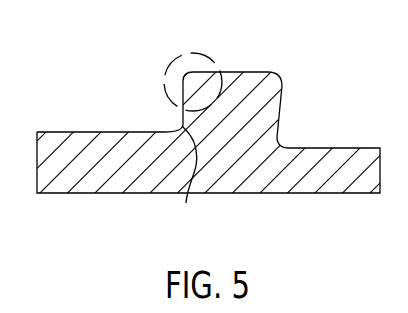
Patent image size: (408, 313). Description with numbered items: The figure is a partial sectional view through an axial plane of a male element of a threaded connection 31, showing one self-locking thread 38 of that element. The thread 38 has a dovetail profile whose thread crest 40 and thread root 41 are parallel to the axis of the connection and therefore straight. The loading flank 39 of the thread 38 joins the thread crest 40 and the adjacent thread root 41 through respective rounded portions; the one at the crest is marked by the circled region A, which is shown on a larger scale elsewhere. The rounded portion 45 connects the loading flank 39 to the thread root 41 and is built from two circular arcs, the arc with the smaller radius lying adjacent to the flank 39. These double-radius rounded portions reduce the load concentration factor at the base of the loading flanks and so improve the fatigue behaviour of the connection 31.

The threaded connection 31 is at (258, 174).
The self-locking thread 38 is at (253, 110).
The loading flank 39 is at (186, 108).
The thread crest 40 is at (240, 72).
The thread root 41 is at (155, 132).
The rounded portion 45 is at (190, 177).
The detail region A is at (196, 53).